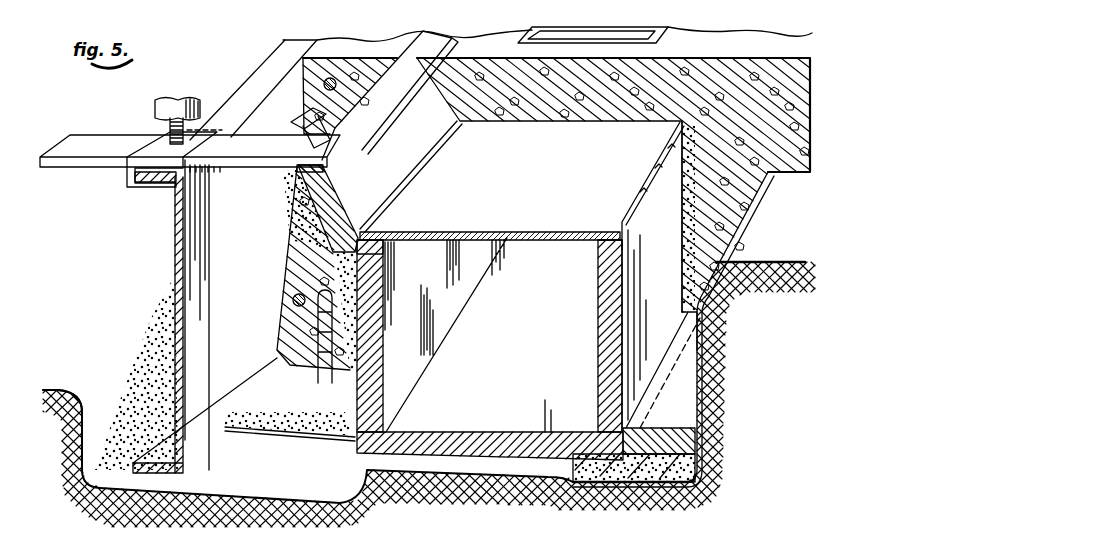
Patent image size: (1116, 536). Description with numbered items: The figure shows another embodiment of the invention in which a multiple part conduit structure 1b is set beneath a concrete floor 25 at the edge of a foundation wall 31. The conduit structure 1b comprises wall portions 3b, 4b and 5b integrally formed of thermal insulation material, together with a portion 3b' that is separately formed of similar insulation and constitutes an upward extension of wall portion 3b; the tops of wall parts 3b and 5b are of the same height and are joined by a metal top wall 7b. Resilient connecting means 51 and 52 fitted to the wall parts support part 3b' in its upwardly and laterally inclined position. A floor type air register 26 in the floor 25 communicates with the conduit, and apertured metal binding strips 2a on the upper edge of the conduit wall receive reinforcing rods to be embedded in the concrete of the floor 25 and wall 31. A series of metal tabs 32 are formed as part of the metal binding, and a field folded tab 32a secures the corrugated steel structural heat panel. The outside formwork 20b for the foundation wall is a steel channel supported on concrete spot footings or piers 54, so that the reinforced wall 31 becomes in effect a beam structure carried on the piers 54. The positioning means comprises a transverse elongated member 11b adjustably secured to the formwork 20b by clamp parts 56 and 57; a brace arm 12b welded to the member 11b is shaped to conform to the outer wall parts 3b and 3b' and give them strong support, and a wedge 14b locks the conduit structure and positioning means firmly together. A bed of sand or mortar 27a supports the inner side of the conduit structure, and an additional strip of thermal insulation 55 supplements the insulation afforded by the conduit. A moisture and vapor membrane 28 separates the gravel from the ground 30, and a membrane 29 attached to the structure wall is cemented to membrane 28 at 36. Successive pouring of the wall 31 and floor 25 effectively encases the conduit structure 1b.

The concrete floor 25 is at (722, 58).
The floor type air register 26 is at (660, 30).
The foundation wall 31 is at (355, 44).
The wedge 14b is at (300, 120).
The clamp part 57 is at (160, 104).
The clamp part 56 is at (147, 155).
The transverse elongated member 11b is at (240, 152).
The brace arm 12b is at (298, 172).
The wall portion 3b' is at (337, 208).
The resilient connecting means 52 is at (370, 224).
The concrete spot footings or piers 54 is at (300, 439).
The metal top wall 7b is at (530, 224).
The wall portion 3b is at (388, 336).
The resilient connecting means 51 is at (384, 249).
The wall portion 5b is at (600, 338).
The metal binding strips 2a is at (598, 247).
The wall portion 4b is at (468, 432).
The multiple part conduit structure 1b is at (468, 335).
The metal tabs 32 is at (648, 162).
The field folded tab 32a is at (642, 192).
The membrane 29 is at (697, 378).
The strip of thermal insulation 55 is at (670, 430).
The bed of sand or mortar 27a is at (646, 488).
The cemented joint 36 is at (742, 265).
The moisture and vapor membrane 28 is at (787, 262).
The ground 30 is at (58, 388).
The outside formwork 20b is at (186, 352).